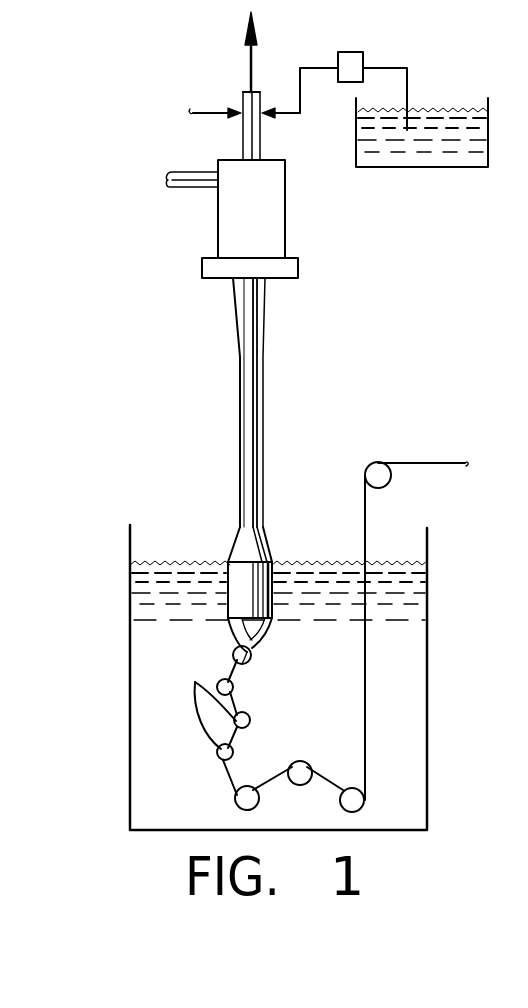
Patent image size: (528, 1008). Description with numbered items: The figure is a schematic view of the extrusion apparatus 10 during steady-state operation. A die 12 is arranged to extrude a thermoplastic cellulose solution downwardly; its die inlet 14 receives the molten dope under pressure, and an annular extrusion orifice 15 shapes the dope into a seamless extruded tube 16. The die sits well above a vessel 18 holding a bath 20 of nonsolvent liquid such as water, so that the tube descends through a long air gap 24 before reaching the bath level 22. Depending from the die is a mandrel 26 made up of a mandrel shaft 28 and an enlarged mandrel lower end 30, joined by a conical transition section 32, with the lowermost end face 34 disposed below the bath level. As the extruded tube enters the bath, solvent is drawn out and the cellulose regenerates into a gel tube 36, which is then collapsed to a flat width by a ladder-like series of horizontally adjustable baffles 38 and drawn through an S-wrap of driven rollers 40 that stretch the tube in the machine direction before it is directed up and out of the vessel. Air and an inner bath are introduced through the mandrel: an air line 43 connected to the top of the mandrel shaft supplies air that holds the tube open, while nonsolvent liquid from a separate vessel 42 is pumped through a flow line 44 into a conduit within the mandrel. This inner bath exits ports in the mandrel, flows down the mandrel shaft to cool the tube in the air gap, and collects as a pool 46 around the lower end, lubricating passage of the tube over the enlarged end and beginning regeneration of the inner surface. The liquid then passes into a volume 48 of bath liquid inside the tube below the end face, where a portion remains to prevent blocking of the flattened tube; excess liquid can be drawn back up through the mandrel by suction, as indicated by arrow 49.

The apparatus 10 is at (138, 275).
The die 12 is at (285, 215).
The die inlet 14 is at (180, 172).
The annular extrusion orifice 15 is at (267, 279).
The extruded tube 16 is at (265, 377).
The vessel 18 is at (128, 698).
The bath 20 is at (160, 738).
The bath level 22 is at (415, 568).
The air gap 24 is at (332, 557).
The mandrel 26 is at (277, 468).
The mandrel shaft 28 is at (247, 407).
The mandrel lower end 30 is at (238, 593).
The conical transition section 32 is at (243, 548).
The lowermost end face 34 is at (267, 643).
The gel tube 36 is at (242, 646).
The baffles 38 is at (235, 656).
The driven rollers 40 is at (352, 800).
The vessel 42 is at (423, 168).
The air line 43 is at (208, 110).
The flow line 44 is at (317, 68).
The pool 46 is at (265, 537).
The volume 48 is at (253, 655).
The arrow 49 is at (250, 70).